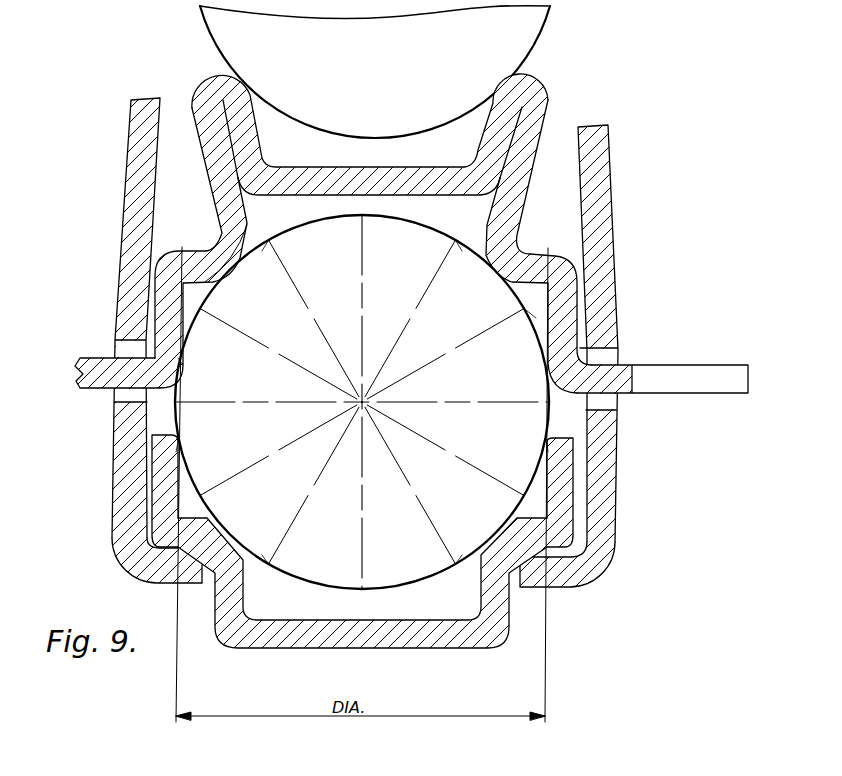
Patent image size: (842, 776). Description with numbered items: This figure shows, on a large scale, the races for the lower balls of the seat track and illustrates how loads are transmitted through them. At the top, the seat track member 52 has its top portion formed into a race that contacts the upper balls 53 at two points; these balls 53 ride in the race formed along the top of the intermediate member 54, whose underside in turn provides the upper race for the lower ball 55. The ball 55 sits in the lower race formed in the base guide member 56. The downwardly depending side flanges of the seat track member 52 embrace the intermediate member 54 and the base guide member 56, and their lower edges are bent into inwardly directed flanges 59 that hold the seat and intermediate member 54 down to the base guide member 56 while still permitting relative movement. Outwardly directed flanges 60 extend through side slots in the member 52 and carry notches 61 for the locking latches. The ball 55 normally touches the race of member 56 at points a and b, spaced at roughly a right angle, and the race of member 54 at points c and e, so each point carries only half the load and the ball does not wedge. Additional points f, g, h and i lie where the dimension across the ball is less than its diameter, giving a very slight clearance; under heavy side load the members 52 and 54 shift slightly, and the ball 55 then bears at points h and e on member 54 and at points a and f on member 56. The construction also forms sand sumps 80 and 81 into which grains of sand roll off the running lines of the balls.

The seat track member 52 is at (131, 188).
The balls 53 is at (375, 72).
The intermediate member 54 is at (192, 283).
The ball 55 is at (362, 402).
The base guide member 56 is at (558, 488).
The inwardly directed flanges 59 is at (190, 574).
The outwardly directed flanges 60 is at (222, 197).
The notches 61 is at (667, 390).
The sand sump 80 is at (370, 134).
The sand sump 81 is at (362, 583).
The contact point a is at (490, 533).
The contact point b is at (233, 533).
The contact point c is at (485, 281).
The contact point e is at (237, 268).
The additional contact point f is at (548, 452).
The additional contact point g is at (178, 446).
The additional contact point h is at (178, 360).
The additional contact point i is at (547, 354).